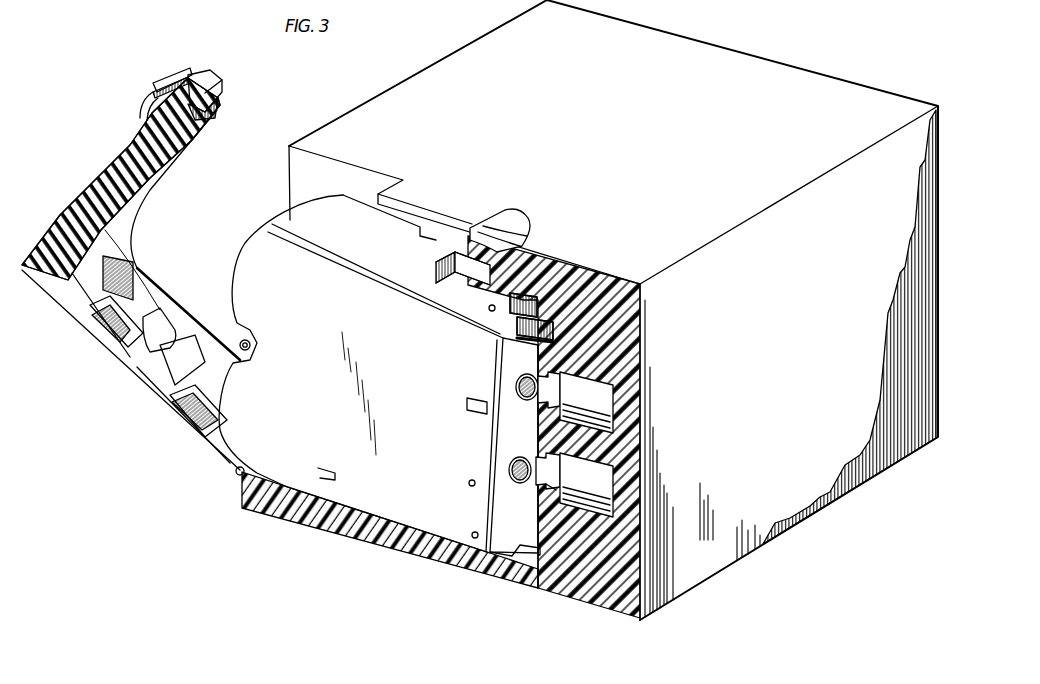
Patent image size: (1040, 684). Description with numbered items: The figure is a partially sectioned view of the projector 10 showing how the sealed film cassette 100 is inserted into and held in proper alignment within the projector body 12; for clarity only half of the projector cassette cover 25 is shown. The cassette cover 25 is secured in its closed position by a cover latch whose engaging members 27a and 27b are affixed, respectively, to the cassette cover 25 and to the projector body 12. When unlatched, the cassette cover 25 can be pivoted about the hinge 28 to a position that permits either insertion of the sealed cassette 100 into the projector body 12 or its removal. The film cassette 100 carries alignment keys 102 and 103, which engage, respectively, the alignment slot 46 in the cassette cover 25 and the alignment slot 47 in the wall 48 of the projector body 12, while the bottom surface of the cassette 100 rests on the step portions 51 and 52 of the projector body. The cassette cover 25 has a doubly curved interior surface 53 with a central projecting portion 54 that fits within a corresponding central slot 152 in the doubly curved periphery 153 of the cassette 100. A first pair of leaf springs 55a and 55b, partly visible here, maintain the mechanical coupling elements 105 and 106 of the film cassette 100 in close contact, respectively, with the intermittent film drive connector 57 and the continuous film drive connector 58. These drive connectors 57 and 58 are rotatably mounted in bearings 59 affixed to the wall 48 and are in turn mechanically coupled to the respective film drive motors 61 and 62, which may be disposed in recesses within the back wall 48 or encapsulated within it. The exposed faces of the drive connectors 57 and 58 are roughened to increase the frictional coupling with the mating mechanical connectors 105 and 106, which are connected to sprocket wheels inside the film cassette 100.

The projector 10 is at (823, 27).
The projector body 12 is at (866, 100).
The projector cassette cover 25 is at (73, 200).
The engaging member 27a is at (156, 80).
The engaging member 27b is at (507, 223).
The hinge 28 is at (240, 470).
The alignment slot 46 is at (222, 106).
The alignment slot 47 is at (553, 336).
The wall 48 is at (620, 444).
The step portion 51 is at (343, 517).
The step portion 52 is at (533, 543).
The doubly curved interior surface 53 is at (152, 340).
The central projecting portion 54 is at (180, 357).
The leaf spring 55a is at (117, 327).
The leaf spring 55b is at (203, 407).
The intermittent film drive connector 57 is at (537, 404).
The continuous film drive connector 58 is at (540, 488).
The bearings 59 is at (537, 456).
The film drive motor 61 is at (600, 401).
The film drive motor 62 is at (604, 485).
The film cassette 100 is at (424, 329).
The alignment key 102 is at (447, 254).
The alignment key 103 is at (515, 344).
The mechanical coupling element 105 is at (526, 392).
The mechanical coupling element 106 is at (520, 480).
The central slot 152 is at (247, 343).
The doubly curved periphery 153 is at (307, 216).